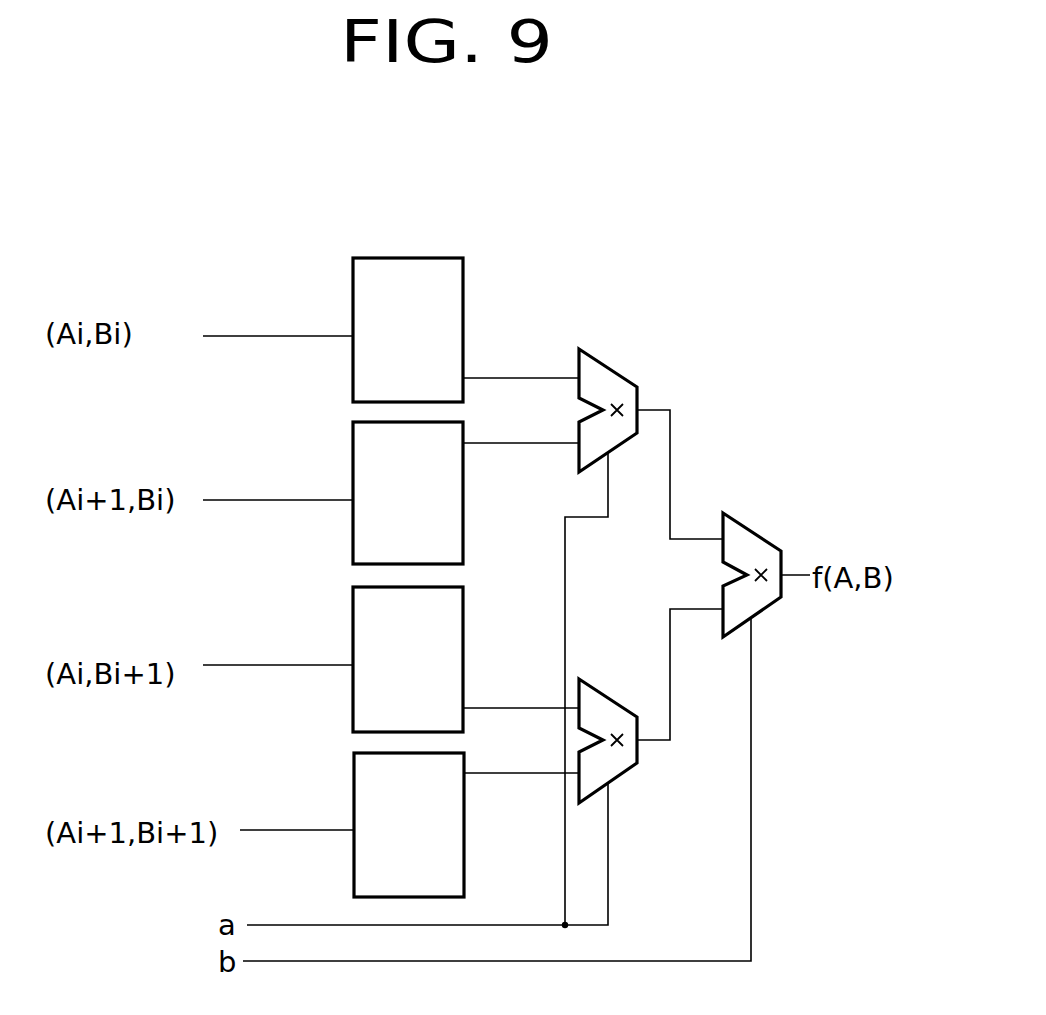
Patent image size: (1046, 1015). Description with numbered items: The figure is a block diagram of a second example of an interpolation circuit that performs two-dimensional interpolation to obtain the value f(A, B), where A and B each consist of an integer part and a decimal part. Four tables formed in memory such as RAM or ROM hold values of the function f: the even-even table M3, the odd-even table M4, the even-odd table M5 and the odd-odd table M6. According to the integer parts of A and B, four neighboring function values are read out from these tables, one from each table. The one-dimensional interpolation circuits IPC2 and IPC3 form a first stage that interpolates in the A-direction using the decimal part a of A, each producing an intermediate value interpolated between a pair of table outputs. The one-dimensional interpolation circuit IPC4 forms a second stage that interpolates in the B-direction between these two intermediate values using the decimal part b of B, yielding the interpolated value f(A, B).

The even-even table M3 is at (463, 282).
The odd-even table M4 is at (463, 533).
The even-odd table M5 is at (463, 612).
The odd-odd table M6 is at (464, 870).
The one-dimensional interpolation circuit IPC2 is at (612, 367).
The one-dimensional interpolation circuit IPC3 is at (612, 785).
The one-dimensional interpolation circuit IPC4 is at (757, 533).